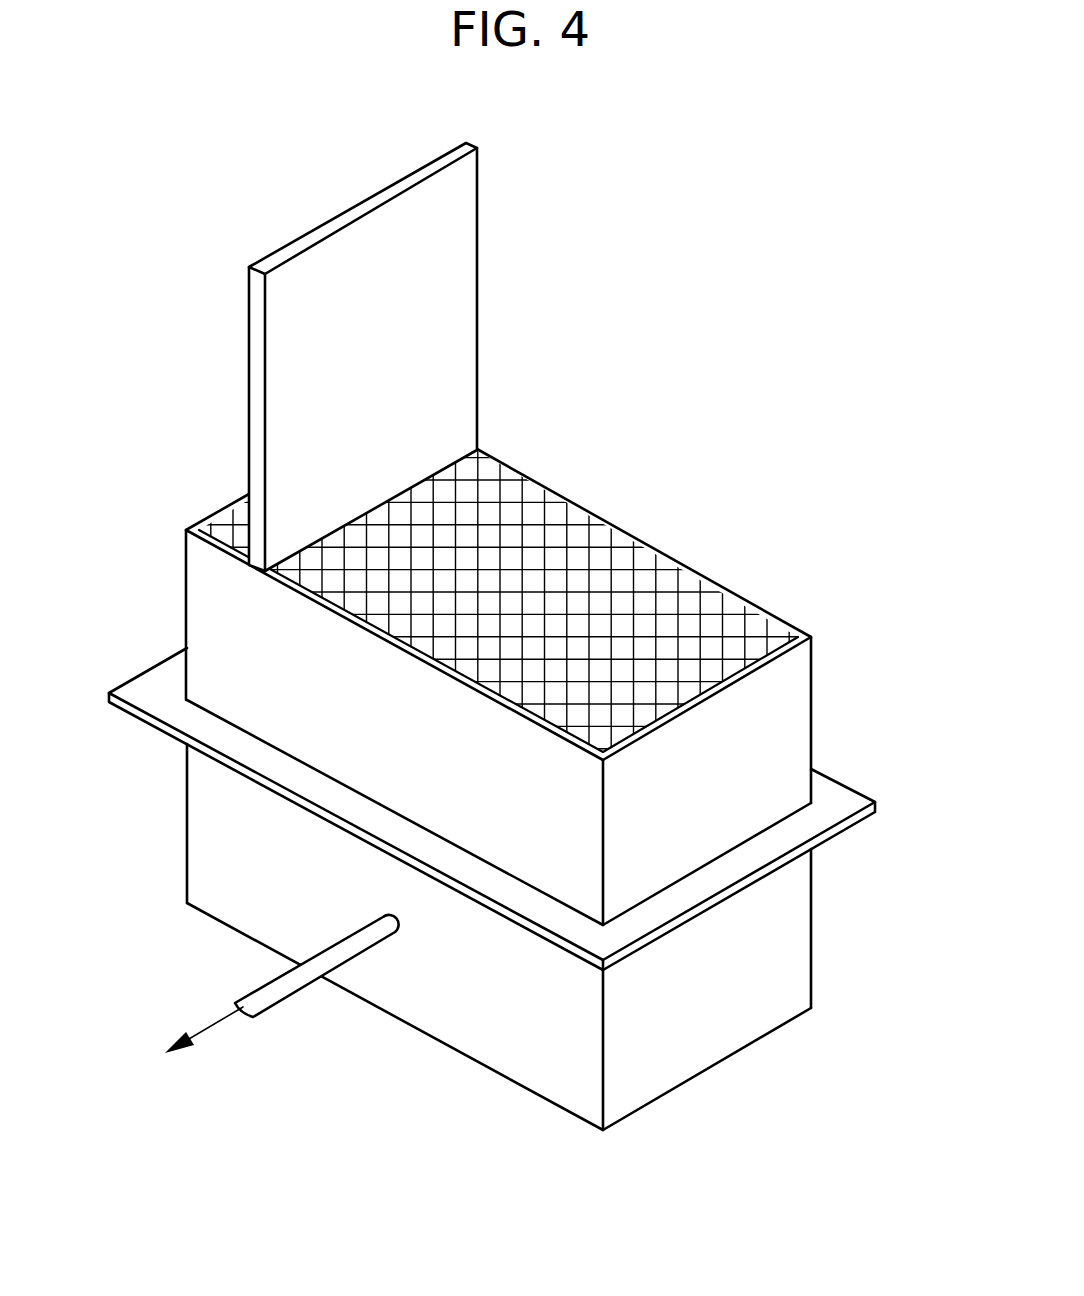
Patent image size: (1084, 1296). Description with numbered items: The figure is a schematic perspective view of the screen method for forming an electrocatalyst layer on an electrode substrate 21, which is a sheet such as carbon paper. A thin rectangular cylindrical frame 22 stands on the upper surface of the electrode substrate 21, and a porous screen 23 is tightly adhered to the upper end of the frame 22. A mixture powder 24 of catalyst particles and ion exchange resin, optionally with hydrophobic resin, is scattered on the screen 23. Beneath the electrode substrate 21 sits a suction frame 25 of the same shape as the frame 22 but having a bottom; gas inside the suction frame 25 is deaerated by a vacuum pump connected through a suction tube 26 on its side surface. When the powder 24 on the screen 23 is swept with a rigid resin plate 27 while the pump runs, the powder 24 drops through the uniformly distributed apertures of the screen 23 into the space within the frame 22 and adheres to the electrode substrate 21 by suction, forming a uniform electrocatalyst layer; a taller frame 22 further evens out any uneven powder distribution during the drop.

The electrode substrate 21 is at (840, 798).
The frame 22 is at (782, 747).
The porous screen 23 is at (780, 614).
The mixture powder 24 is at (623, 582).
The suction frame 25 is at (715, 1023).
The suction tube 26 is at (290, 982).
The rigid resin plate 27 is at (438, 252).